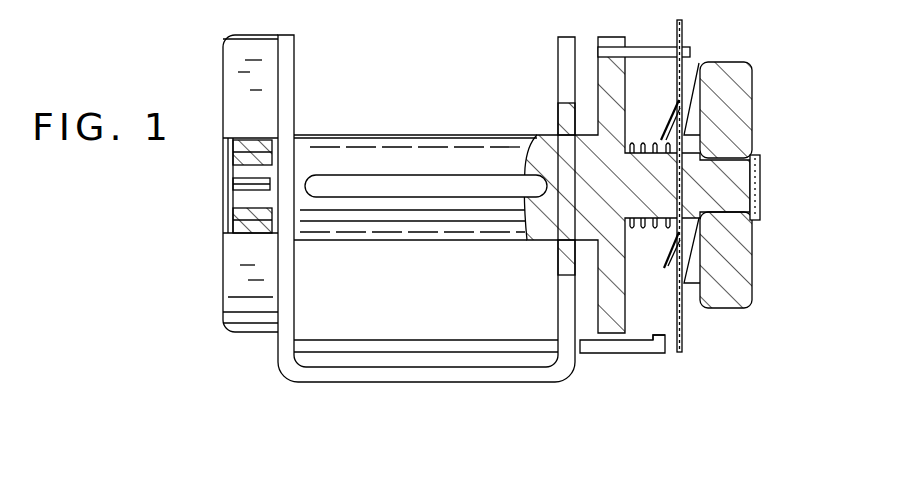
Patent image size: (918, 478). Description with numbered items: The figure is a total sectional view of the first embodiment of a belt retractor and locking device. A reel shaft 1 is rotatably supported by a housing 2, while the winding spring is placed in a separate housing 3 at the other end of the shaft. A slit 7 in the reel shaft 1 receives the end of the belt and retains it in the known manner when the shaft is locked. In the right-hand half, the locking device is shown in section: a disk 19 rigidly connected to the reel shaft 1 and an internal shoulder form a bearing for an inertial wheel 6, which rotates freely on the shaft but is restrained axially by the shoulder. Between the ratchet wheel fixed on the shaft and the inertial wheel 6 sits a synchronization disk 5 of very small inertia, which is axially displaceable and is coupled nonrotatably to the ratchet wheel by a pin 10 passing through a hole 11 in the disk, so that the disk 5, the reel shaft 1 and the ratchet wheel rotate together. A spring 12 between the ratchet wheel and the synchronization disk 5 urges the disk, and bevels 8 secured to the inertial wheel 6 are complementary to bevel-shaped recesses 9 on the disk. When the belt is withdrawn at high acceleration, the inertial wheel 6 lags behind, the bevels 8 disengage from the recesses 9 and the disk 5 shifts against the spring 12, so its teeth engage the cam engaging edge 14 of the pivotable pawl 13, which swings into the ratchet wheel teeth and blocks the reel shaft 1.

The reel shaft 1 is at (420, 138).
The housing 2 is at (289, 59).
The housing 3 is at (230, 115).
The synchronization disk 5 is at (677, 68).
The inertial wheel 6 is at (745, 83).
The slit 7 is at (418, 198).
The bevels 8 is at (693, 128).
The bevel-shaped recesses 9 is at (665, 272).
The pin 10 is at (645, 46).
The hole 11 is at (682, 43).
The spring 12 is at (655, 233).
The pawl 13 is at (633, 355).
The cam engaging edge 14 is at (658, 336).
The disk 19 is at (760, 168).